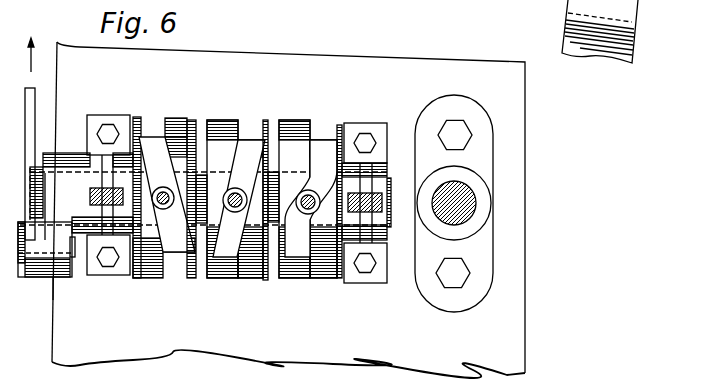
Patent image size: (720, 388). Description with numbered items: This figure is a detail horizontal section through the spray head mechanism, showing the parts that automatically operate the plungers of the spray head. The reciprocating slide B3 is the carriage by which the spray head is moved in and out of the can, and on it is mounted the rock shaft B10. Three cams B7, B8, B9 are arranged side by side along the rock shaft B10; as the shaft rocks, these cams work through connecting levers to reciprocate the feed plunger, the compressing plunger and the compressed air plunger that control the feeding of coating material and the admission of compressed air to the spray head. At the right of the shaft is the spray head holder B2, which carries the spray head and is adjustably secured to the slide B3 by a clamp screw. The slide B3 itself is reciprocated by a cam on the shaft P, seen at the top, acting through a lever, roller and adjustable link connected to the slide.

The spray head holder B2 is at (473, 217).
The reciprocating slide B3 is at (288, 210).
The cam B7 is at (148, 278).
The cam B8 is at (256, 279).
The cam B9 is at (328, 281).
The rock shaft B10 is at (388, 230).
The shaft P is at (632, 15).